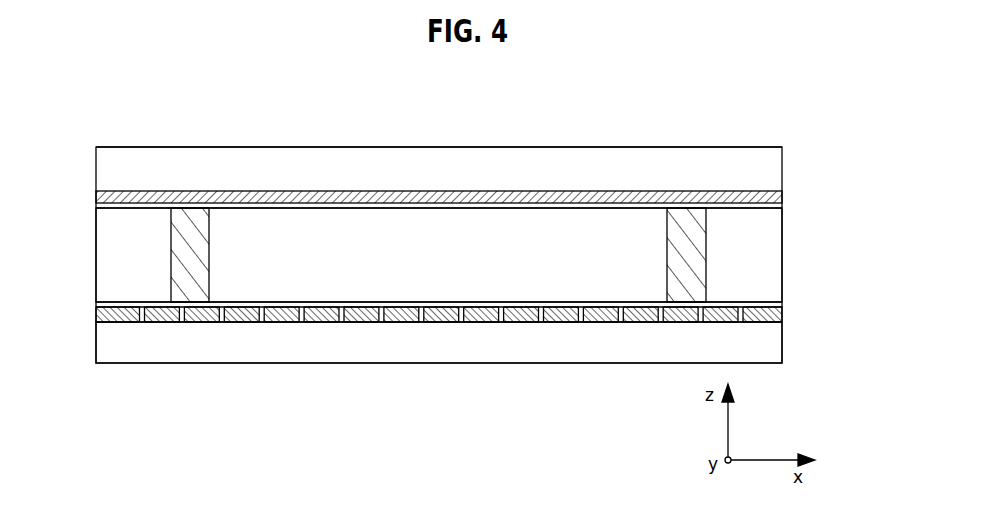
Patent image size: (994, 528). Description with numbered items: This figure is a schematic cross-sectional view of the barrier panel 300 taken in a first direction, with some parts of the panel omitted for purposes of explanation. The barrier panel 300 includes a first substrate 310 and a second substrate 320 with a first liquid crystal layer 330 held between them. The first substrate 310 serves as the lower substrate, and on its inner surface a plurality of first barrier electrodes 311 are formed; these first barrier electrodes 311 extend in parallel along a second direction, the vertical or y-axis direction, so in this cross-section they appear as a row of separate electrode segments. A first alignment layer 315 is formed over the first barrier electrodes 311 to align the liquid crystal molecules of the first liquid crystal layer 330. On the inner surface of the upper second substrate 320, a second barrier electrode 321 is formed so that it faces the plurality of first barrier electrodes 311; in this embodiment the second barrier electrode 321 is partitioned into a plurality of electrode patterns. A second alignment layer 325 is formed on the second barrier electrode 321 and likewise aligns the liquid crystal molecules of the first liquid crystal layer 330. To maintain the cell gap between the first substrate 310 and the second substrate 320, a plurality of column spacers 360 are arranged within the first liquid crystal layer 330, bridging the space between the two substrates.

The barrier panel 300 is at (457, 469).
The first substrate 310 is at (768, 345).
The first barrier electrodes 311 is at (120, 315).
The first alignment layer 315 is at (768, 305).
The second substrate 320 is at (768, 173).
The second barrier electrode 321 is at (782, 193).
The second alignment layer 325 is at (782, 208).
The first liquid crystal layer 330 is at (768, 262).
The column spacers 360 is at (185, 255).